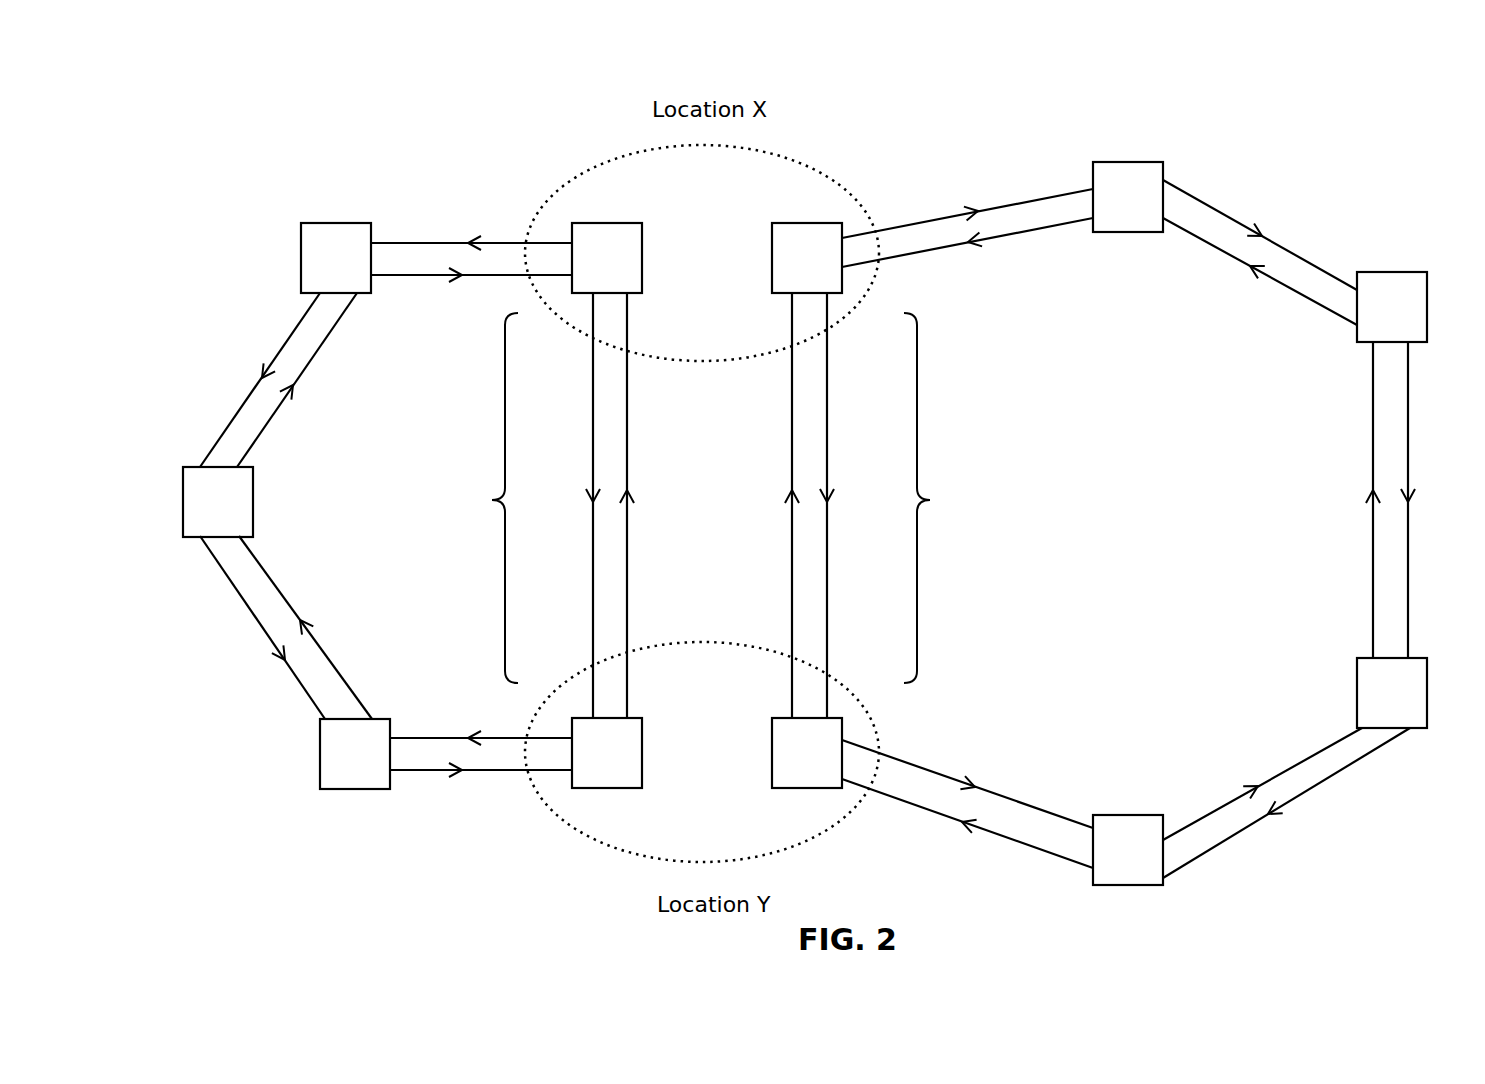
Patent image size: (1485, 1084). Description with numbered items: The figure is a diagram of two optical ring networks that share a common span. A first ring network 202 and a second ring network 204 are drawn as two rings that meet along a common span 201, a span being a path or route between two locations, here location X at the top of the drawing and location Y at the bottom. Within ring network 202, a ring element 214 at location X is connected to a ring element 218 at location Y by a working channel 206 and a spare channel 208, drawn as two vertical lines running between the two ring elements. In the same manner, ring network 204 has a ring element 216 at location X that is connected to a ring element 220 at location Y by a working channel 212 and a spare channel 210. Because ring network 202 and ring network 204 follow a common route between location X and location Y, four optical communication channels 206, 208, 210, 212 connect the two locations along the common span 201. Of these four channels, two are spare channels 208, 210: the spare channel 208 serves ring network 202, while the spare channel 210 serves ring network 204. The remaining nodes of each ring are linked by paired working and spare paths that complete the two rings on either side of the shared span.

The common span 201 is at (505, 425).
The ring network 202 is at (391, 187).
The ring network 204 is at (1334, 184).
The working channel 206 is at (593, 572).
The spare channel 208 is at (627, 572).
The spare channel 210 is at (792, 572).
The working channel 212 is at (827, 572).
The ring element 214 is at (642, 243).
The ring element 216 is at (772, 243).
The ring element 218 is at (642, 738).
The ring element 220 is at (772, 738).